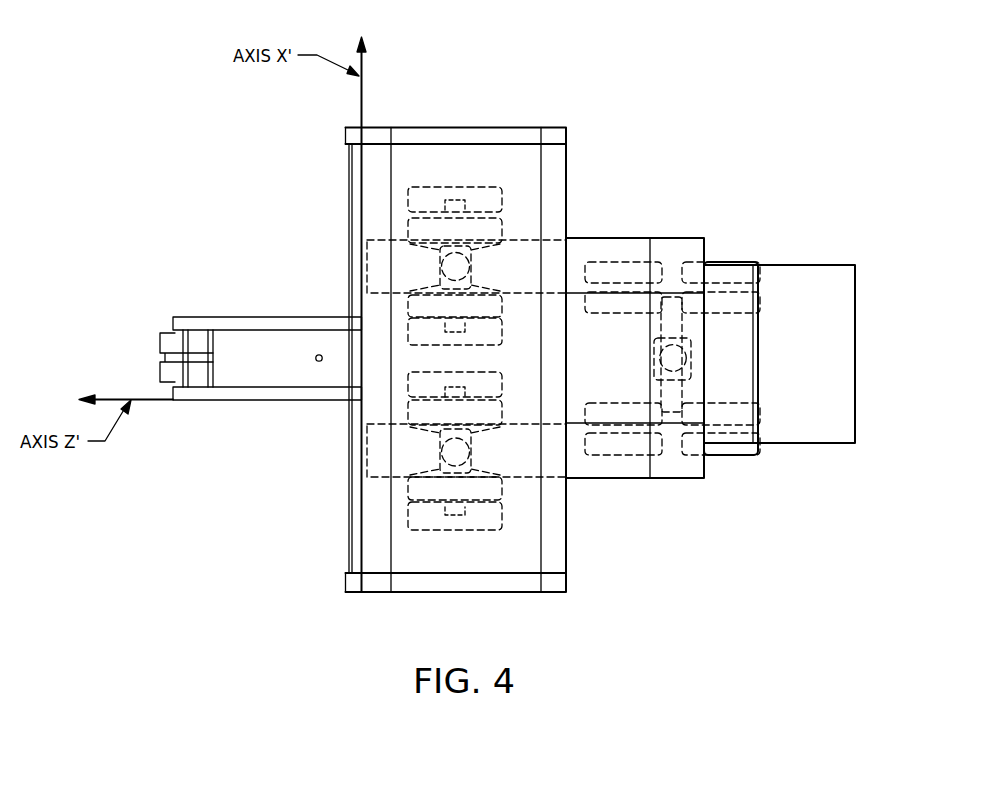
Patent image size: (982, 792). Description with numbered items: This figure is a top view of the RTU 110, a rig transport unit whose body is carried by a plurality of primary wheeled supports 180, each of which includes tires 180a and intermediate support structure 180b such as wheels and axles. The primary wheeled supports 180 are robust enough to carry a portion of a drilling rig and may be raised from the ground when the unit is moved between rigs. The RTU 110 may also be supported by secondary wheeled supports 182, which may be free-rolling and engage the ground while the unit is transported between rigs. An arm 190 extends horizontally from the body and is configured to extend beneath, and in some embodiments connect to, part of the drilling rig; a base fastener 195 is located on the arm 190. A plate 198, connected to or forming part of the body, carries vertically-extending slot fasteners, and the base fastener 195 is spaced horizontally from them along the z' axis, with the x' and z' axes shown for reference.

The RTU 110 is at (652, 130).
The plate 198 is at (349, 203).
The arm 190 is at (212, 317).
The base fastener 195 is at (319, 354).
The primary wheeled supports 180 is at (502, 508).
The tires 180a is at (478, 531).
The intermediate support structure 180b is at (443, 514).
The secondary wheeled supports 182 is at (732, 457).